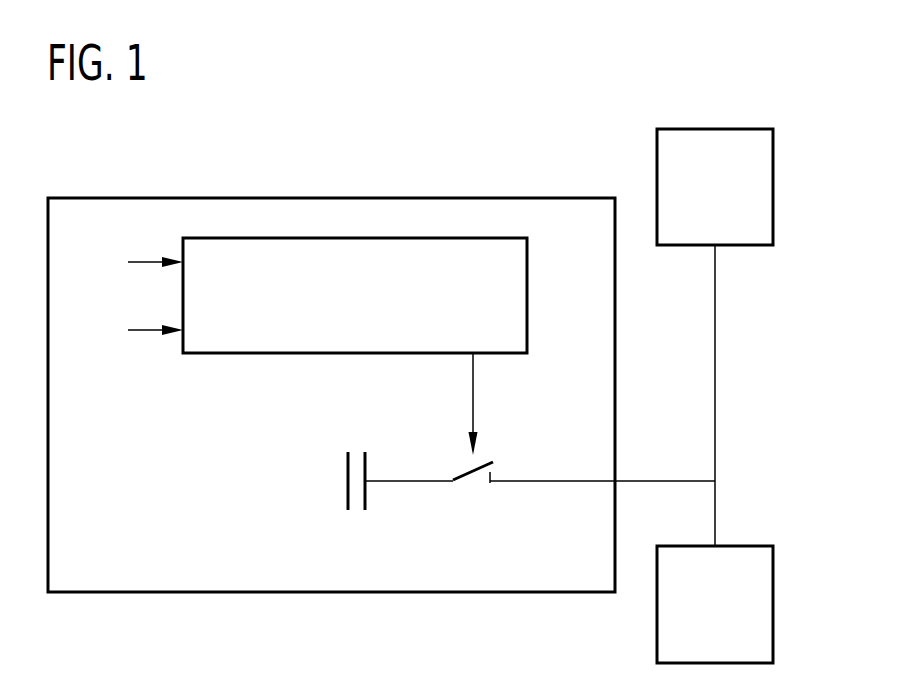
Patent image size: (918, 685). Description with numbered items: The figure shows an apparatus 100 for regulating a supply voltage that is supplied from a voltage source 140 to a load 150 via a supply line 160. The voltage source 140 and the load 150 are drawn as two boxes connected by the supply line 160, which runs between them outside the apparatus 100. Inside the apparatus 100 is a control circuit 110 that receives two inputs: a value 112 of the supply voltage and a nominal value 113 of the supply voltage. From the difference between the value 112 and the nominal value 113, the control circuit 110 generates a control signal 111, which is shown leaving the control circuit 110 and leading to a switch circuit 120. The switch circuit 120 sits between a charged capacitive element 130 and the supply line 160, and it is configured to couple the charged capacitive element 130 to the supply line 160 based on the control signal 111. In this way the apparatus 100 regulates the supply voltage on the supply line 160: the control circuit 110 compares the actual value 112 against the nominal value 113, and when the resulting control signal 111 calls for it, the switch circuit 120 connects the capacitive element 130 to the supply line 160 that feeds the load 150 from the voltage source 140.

The apparatus 100 is at (331, 197).
The control circuit 110 is at (378, 311).
The control signal 111 is at (473, 391).
The value of the supply voltage 112 is at (132, 263).
The nominal value of the supply voltage 113 is at (132, 331).
The switch circuit 120 is at (477, 500).
The capacitive element 130 is at (347, 481).
The voltage source 140 is at (693, 202).
The load 150 is at (693, 618).
The supply line 160 is at (715, 396).